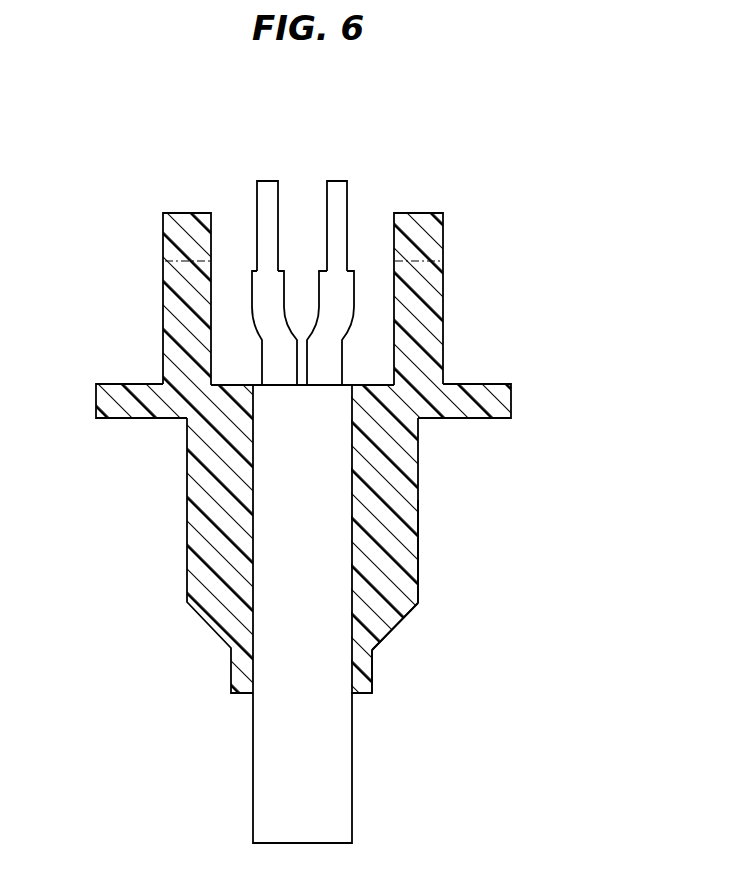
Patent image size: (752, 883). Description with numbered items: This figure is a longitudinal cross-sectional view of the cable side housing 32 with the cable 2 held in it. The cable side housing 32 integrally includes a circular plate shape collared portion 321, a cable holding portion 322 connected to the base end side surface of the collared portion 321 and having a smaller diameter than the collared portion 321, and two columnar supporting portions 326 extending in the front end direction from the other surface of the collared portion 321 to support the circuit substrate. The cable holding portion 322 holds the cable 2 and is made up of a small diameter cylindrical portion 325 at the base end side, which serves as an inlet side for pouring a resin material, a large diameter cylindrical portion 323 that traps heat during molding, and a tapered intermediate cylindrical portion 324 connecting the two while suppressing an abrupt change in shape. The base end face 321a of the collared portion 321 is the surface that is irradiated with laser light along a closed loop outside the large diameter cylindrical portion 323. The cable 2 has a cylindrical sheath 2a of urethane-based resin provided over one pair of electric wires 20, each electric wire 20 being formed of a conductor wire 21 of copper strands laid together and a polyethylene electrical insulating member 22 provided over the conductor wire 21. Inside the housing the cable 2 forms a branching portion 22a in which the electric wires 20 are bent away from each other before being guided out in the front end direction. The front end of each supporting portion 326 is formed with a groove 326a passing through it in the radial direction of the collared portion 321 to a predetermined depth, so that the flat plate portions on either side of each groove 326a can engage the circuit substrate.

The cable 2 is at (296, 614).
The sheath 2a is at (268, 792).
The electric wire 20 is at (215, 273).
The conductor wire 21 is at (267, 178).
The electrical insulating member 22 is at (214, 290).
The branching portion 22a is at (323, 360).
The cable side housing 32 is at (376, 441).
The collared portion 321 is at (317, 405).
The base end face 321a is at (475, 420).
The cable holding portion 322 is at (368, 555).
The large diameter cylindrical portion 323 is at (418, 570).
The intermediate cylindrical portion 324 is at (390, 627).
The small diameter cylindrical portion 325 is at (432, 671).
The supporting portion 326 is at (302, 293).
The groove 326a is at (175, 253).